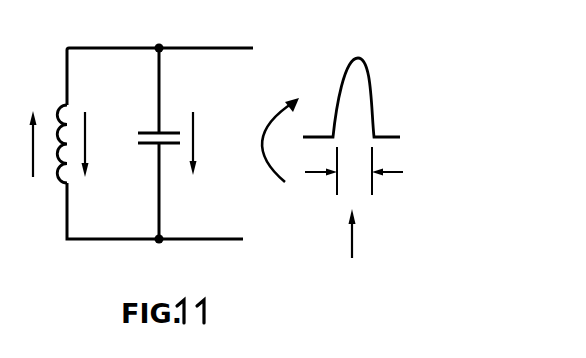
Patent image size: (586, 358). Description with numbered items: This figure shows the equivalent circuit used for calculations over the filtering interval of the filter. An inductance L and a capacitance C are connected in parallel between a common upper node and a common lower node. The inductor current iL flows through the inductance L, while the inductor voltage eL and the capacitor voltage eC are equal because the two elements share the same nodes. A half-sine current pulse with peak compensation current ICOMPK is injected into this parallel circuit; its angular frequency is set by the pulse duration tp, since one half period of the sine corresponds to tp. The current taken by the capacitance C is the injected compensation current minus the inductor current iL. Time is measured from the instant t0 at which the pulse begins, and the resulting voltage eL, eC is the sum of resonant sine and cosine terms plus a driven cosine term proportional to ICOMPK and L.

The inductance L is at (47, 133).
The capacitance C is at (154, 123).
The inductor current iL is at (33, 166).
The inductor voltage eL is at (98, 144).
The capacitor voltage eC is at (207, 143).
The peak compensation current ICOMPK is at (322, 20).
The pulse duration tp is at (354, 171).
The time origin t0 is at (355, 251).